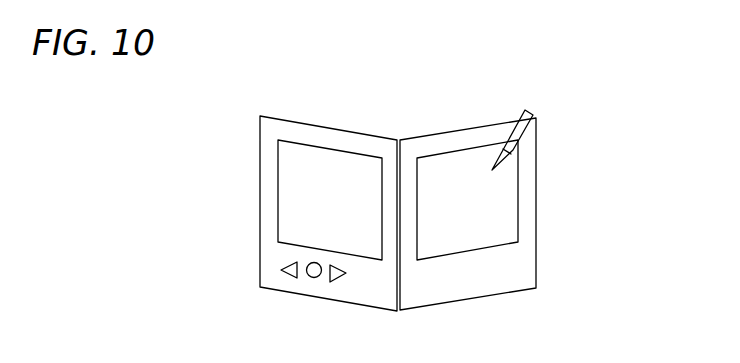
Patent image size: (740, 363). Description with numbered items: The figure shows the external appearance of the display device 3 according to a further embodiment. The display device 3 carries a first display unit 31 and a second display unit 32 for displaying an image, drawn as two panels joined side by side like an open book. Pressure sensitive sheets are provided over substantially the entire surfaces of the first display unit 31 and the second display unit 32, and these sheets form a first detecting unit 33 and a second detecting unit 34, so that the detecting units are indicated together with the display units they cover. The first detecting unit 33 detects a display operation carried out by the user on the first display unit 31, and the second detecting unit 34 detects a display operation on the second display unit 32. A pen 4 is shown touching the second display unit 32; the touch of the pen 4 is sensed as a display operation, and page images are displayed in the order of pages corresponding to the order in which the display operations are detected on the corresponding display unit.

The display device 3 is at (276, 292).
The pen 4 is at (533, 112).
The first display unit 31 is at (278, 192).
The second display unit 32 is at (518, 188).
The first detecting unit 33 is at (330, 200).
The second detecting unit 34 is at (467, 200).